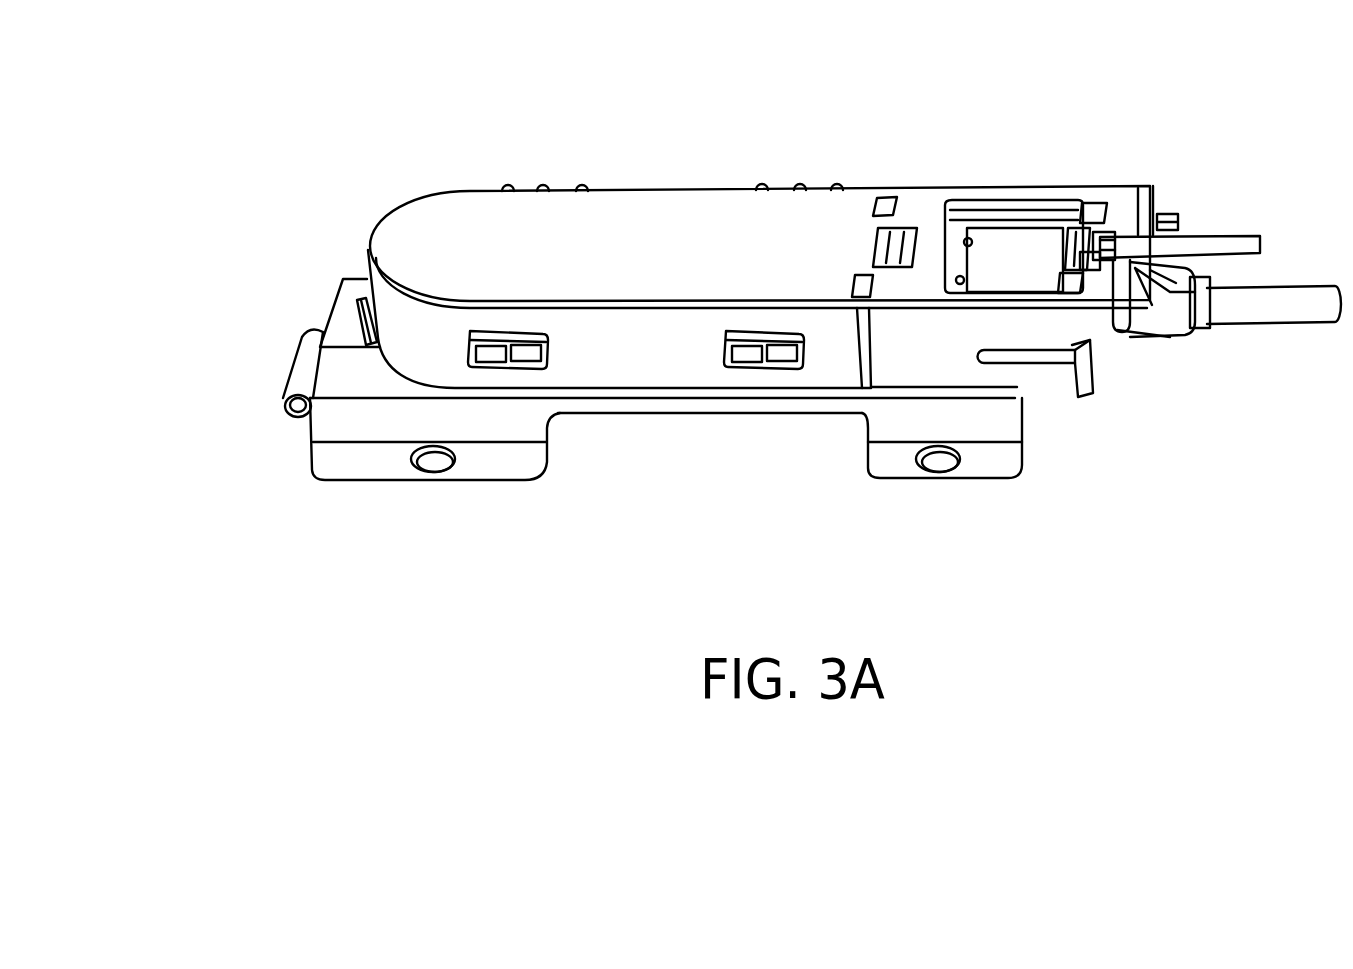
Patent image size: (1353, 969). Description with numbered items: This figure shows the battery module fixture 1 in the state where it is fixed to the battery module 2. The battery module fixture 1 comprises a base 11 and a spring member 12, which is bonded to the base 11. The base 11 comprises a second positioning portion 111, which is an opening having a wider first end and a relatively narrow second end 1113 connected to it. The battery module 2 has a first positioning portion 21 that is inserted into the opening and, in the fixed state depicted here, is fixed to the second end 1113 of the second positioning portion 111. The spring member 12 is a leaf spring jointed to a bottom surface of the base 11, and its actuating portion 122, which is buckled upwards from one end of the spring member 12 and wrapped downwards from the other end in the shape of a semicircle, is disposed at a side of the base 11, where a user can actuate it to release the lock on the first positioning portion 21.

The battery module fixture 1 is at (533, 485).
The base 11 is at (533, 434).
The second positioning portion 111 is at (212, 308).
The second end 1113 is at (352, 338).
The spring member 12 is at (223, 463).
The actuating portion 122 is at (300, 372).
The battery module 2 is at (823, 216).
The first positioning portion 21 is at (367, 330).